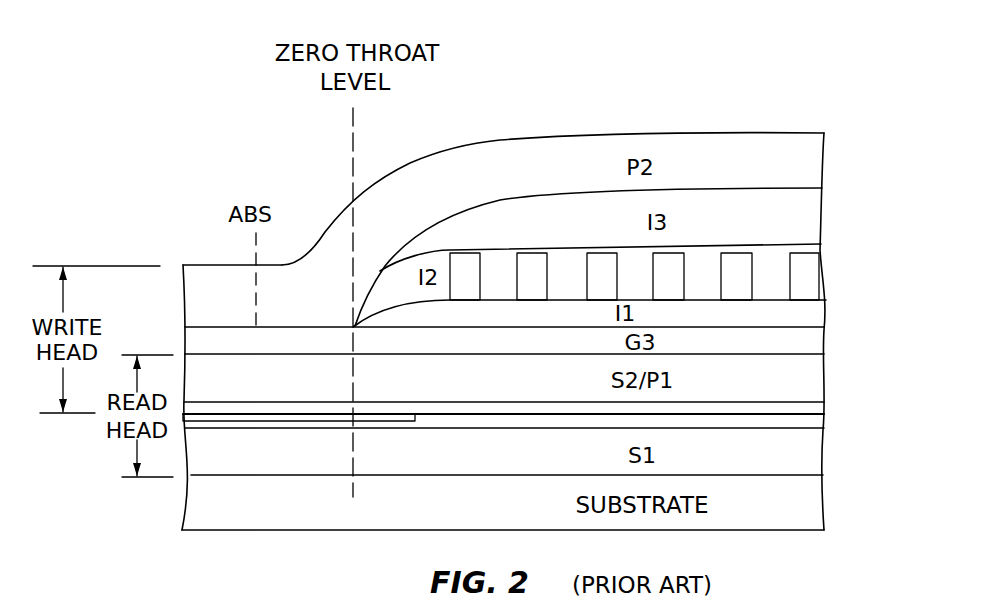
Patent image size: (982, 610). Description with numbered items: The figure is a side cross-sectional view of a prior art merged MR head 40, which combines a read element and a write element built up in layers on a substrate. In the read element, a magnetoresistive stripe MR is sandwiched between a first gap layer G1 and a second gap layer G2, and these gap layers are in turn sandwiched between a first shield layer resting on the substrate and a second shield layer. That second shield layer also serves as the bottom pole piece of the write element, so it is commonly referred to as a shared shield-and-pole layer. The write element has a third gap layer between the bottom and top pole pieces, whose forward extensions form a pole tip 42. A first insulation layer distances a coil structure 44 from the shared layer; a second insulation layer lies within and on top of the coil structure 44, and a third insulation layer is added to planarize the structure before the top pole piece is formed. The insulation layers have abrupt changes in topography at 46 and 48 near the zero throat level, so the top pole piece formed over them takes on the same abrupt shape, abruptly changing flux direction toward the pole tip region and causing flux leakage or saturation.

The prior art merged MR head 40 is at (667, 97).
The pole tip 42 is at (283, 264).
The coil structure 44 is at (740, 252).
The abrupt topography change 46 is at (361, 319).
The abrupt topography change 48 is at (380, 270).
The magnetoresistive stripe MR is at (188, 402).
The first gap layer G1 is at (844, 426).
The second gap layer G2 is at (844, 407).